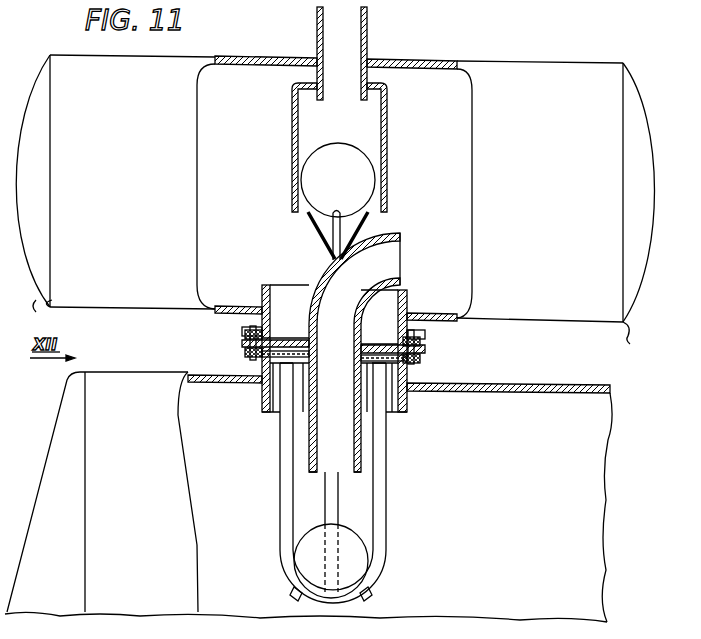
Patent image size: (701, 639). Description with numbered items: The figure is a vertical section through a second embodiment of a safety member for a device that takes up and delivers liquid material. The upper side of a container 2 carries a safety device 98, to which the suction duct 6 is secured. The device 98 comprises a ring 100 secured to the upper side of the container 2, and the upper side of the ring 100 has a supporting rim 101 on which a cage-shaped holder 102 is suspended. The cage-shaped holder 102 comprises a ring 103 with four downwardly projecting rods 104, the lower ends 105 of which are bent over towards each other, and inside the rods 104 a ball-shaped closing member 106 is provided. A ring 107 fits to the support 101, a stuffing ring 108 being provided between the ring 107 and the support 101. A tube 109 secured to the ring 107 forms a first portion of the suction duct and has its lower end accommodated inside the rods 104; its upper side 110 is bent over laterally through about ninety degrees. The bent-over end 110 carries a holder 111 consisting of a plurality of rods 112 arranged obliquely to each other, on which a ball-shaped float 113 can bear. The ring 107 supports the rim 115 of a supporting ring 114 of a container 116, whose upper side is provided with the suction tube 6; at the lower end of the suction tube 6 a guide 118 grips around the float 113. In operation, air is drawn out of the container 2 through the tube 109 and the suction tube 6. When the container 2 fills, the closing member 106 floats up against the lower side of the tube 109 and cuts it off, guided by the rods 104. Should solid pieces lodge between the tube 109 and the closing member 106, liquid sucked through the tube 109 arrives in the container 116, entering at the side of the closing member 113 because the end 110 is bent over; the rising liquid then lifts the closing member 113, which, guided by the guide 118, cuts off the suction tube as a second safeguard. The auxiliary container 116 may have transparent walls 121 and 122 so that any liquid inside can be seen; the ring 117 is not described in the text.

The container 2 is at (557, 385).
The suction duct 6 is at (367, 32).
The safety device 98 is at (246, 342).
The ring 100 is at (405, 405).
The supporting rim 101 is at (425, 360).
The cage-shaped holder 102 is at (402, 524).
The ring 103 is at (288, 368).
The downwardly projecting rods 104 is at (376, 501).
The lower ends 105 is at (295, 592).
The ball-shaped closing member 106 is at (366, 592).
The ring 107 is at (430, 345).
The stuffing ring 108 is at (418, 391).
The tube 109 is at (362, 458).
The upper side of the tube 110 is at (401, 232).
The holder 111 is at (316, 234).
The rods 112 is at (362, 231).
The ball-shaped float 113 is at (326, 152).
The supporting ring 114 is at (262, 288).
The rim 115 is at (413, 330).
The container 116 is at (506, 68).
The flange 117 is at (425, 333).
The guide 118 is at (292, 102).
The transparent wall 121 is at (41, 317).
The transparent wall 122 is at (624, 339).